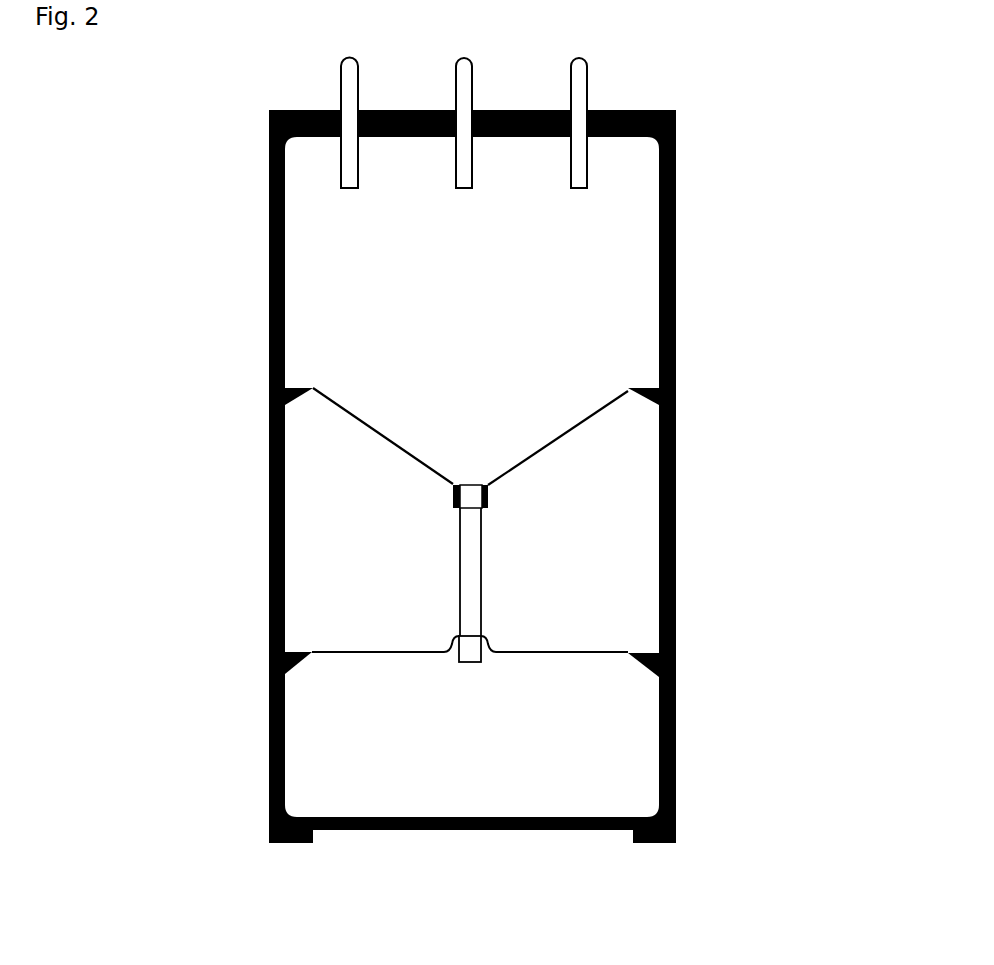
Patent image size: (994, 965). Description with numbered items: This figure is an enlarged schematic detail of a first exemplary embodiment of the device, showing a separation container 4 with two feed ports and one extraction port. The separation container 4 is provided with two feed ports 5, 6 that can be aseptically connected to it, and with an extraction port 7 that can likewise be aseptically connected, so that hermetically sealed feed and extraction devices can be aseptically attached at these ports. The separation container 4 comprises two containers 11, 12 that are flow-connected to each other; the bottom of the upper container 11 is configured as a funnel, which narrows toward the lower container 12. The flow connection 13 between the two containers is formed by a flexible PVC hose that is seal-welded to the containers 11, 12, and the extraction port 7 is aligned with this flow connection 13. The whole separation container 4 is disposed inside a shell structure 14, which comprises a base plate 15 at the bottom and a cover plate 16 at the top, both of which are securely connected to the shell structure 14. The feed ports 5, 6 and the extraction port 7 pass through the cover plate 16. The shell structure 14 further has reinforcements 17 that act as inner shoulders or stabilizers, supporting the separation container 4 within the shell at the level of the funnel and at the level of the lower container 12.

The separation container 4 is at (183, 393).
The feed port 5 is at (349, 88).
The feed port 6 is at (578, 70).
The extraction port 7 is at (465, 70).
The container 11 is at (465, 246).
The container 12 is at (473, 733).
The flow connection 13 is at (470, 561).
The shell structure 14 is at (676, 552).
The base plate 15 is at (483, 830).
The cover plate 16 is at (409, 109).
The reinforcements 17 is at (676, 405).